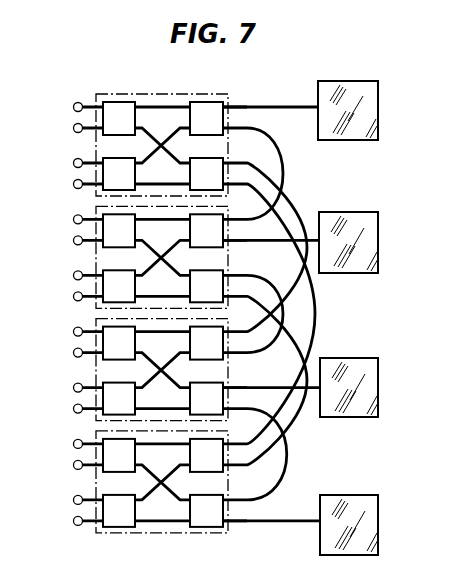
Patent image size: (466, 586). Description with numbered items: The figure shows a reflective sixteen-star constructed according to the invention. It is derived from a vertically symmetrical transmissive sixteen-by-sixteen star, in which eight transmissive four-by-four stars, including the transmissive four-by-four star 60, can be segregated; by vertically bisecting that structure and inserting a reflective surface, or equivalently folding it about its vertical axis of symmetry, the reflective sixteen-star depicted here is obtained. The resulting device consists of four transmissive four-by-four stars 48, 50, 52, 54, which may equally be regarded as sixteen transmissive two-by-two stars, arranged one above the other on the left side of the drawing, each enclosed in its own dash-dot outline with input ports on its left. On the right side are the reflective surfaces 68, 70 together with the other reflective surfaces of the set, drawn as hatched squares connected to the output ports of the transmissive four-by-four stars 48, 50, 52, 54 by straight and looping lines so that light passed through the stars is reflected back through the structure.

The transmissive 4×4 star 48 is at (98, 93).
The transmissive 4×4 star 50 is at (100, 209).
The transmissive 4×4 star 52 is at (100, 322).
The transmissive 4×4 star 54 is at (100, 433).
The transmissive 4×4 star 60 is at (373, 226).
The reflective surface 68 is at (373, 376).
The reflective surface 70 is at (373, 509).